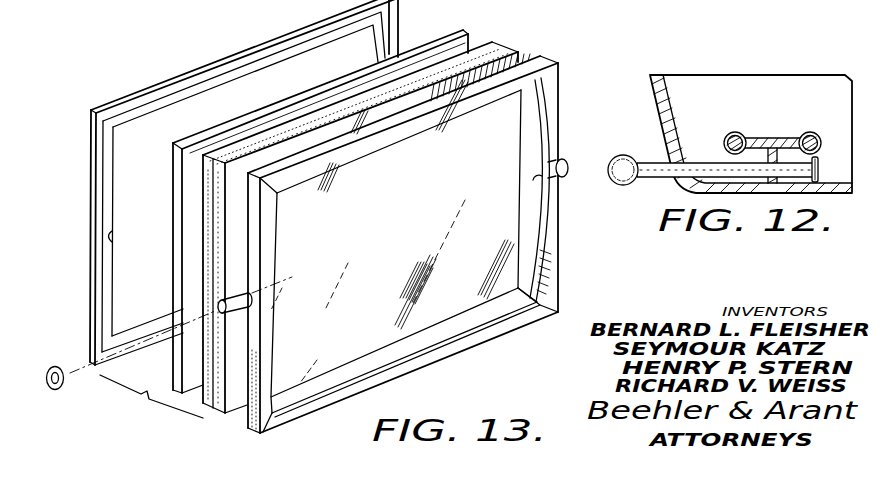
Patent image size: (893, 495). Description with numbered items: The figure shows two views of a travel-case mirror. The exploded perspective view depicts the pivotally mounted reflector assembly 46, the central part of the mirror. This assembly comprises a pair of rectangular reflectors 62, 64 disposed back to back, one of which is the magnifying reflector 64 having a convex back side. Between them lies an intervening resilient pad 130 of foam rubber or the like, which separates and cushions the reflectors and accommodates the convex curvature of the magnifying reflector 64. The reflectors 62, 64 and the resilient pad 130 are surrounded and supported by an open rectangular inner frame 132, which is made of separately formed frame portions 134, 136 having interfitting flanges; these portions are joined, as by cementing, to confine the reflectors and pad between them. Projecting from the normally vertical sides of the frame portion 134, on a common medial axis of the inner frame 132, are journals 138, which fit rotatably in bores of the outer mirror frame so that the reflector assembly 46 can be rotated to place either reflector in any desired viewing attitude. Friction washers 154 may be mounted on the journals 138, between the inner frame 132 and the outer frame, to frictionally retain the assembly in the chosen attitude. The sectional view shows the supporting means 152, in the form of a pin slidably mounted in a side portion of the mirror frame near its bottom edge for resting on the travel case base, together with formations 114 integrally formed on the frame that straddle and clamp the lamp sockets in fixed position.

In FIG. 13, the frame portion 136 is at (138, 93).
In FIG. 13, the reflector 62 is at (257, 160).
In FIG. 13, the magnifying reflector 64 is at (355, 85).
In FIG. 13, the resilient pad 130 is at (303, 120).
In FIG. 13, the reflector assembly 46 is at (560, 70).
In FIG. 13, the inner frame 132 is at (550, 115).
In FIG. 13, the frame portion 134 is at (556, 270).
In FIG. 13, the journals 138 is at (557, 159).
In FIG. 13, the friction washers 154 is at (62, 389).
In FIG. 12, the supporting means 152 is at (690, 165).
In FIG. 12, the formations 114 is at (786, 136).